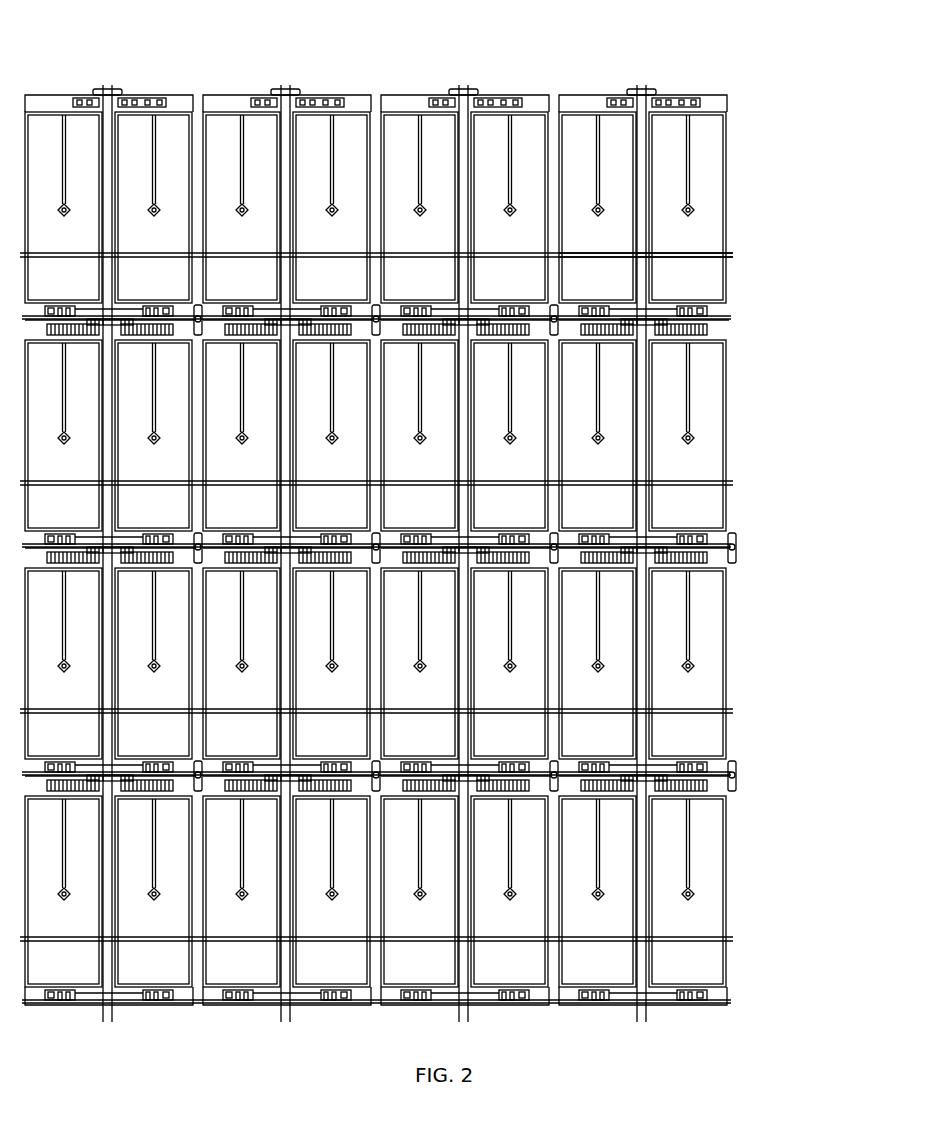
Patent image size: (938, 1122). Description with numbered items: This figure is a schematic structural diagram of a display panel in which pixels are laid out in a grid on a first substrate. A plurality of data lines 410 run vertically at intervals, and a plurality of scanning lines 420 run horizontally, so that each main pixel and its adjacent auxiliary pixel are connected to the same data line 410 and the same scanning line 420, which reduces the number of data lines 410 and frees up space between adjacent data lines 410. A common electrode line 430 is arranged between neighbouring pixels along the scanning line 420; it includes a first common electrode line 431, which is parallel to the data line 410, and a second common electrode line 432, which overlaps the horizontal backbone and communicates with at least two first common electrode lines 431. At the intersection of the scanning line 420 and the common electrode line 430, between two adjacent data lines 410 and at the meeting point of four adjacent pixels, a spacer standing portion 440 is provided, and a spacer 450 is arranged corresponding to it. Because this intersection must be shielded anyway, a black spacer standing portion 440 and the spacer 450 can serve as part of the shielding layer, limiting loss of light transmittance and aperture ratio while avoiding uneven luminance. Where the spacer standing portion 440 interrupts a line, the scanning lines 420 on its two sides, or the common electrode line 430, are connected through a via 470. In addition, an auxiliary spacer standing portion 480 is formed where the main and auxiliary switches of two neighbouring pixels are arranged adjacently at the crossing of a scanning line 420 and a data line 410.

The data line 410 is at (107, 86).
The scanning line 420 is at (722, 103).
The common electrode line 430 is at (715, 207).
The first common electrode line 431 is at (727, 205).
The second common electrode line 432 is at (704, 252).
The spacer standing portion 440 is at (555, 313).
The spacer 450 is at (615, 322).
The via 470 is at (725, 778).
The auxiliary spacer standing portion 480 is at (548, 540).